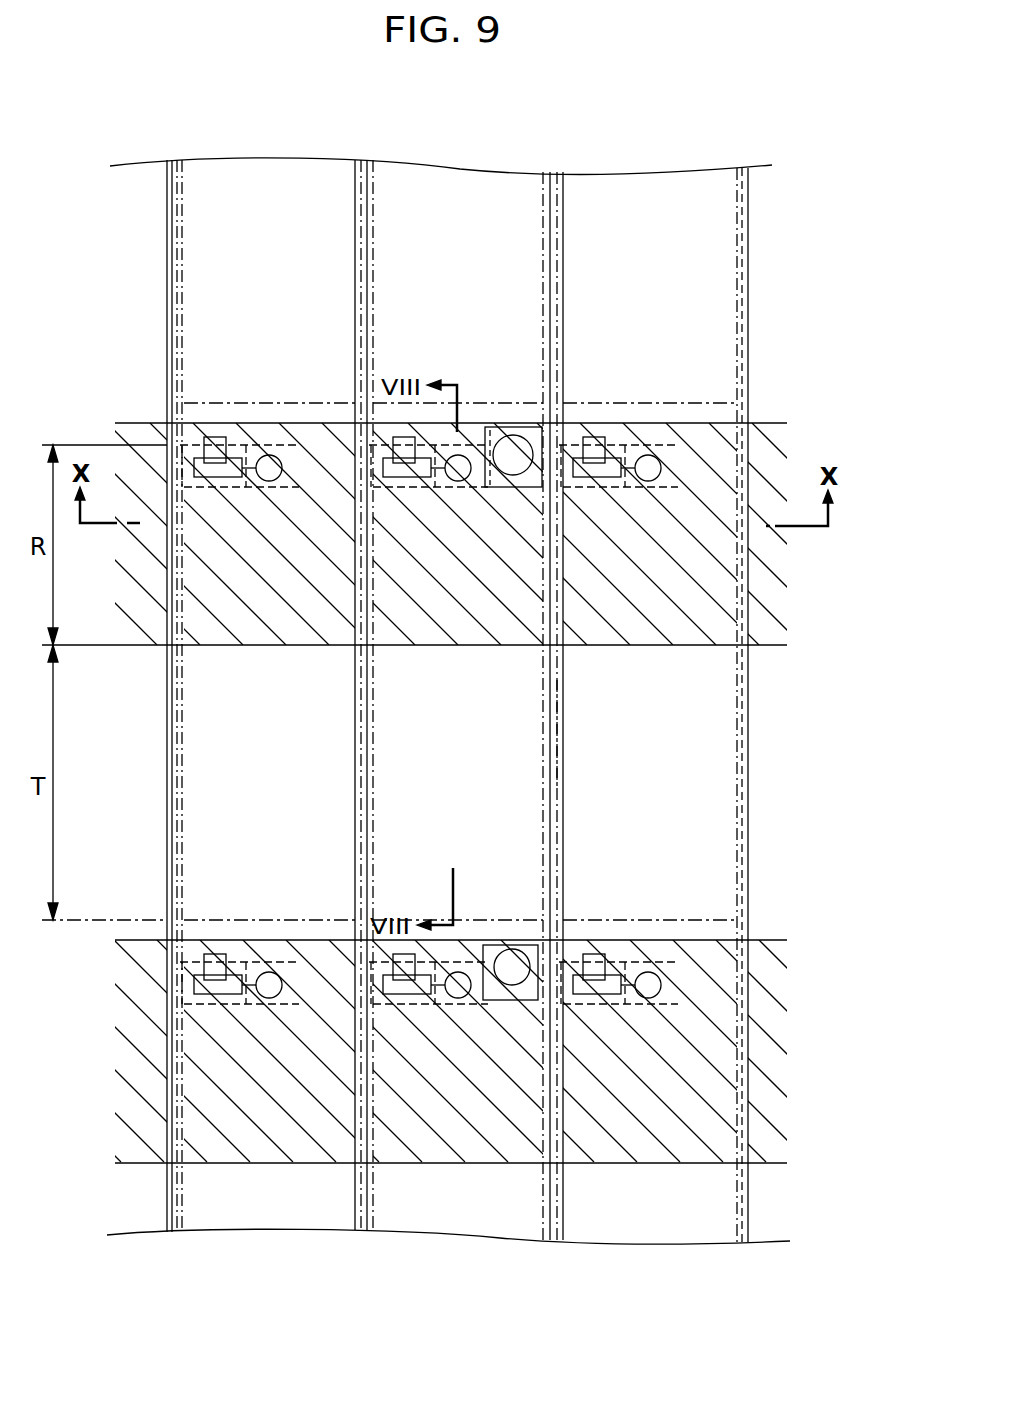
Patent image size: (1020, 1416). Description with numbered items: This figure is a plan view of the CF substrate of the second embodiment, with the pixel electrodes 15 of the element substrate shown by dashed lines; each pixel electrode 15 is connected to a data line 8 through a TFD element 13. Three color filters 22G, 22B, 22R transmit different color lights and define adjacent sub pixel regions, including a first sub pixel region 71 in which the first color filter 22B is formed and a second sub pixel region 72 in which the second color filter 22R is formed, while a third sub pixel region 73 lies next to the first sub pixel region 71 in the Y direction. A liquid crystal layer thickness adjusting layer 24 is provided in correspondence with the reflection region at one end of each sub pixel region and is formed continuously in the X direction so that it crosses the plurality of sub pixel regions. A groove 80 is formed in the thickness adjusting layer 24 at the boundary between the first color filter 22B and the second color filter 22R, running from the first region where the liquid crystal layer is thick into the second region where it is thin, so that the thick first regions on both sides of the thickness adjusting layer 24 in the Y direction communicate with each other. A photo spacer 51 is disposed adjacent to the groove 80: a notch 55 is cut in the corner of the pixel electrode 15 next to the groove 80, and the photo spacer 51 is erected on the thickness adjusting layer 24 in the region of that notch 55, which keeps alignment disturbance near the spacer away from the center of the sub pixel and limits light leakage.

The color filter 22G is at (172, 160).
The first color filter 22B is at (363, 160).
The second color filter 22R is at (553, 172).
The third sub pixel region 73 is at (452, 295).
The notch 55 is at (487, 420).
The photo spacer 51 is at (514, 432).
The first sub pixel region 71 is at (448, 553).
The second sub pixel region 72 is at (642, 553).
The TFD element 13 is at (429, 769).
The liquid crystal layer thickness adjusting layer 24 is at (768, 600).
The pixel electrode 15 is at (753, 708).
The groove 80 is at (557, 735).
The data line 8 is at (183, 1175).